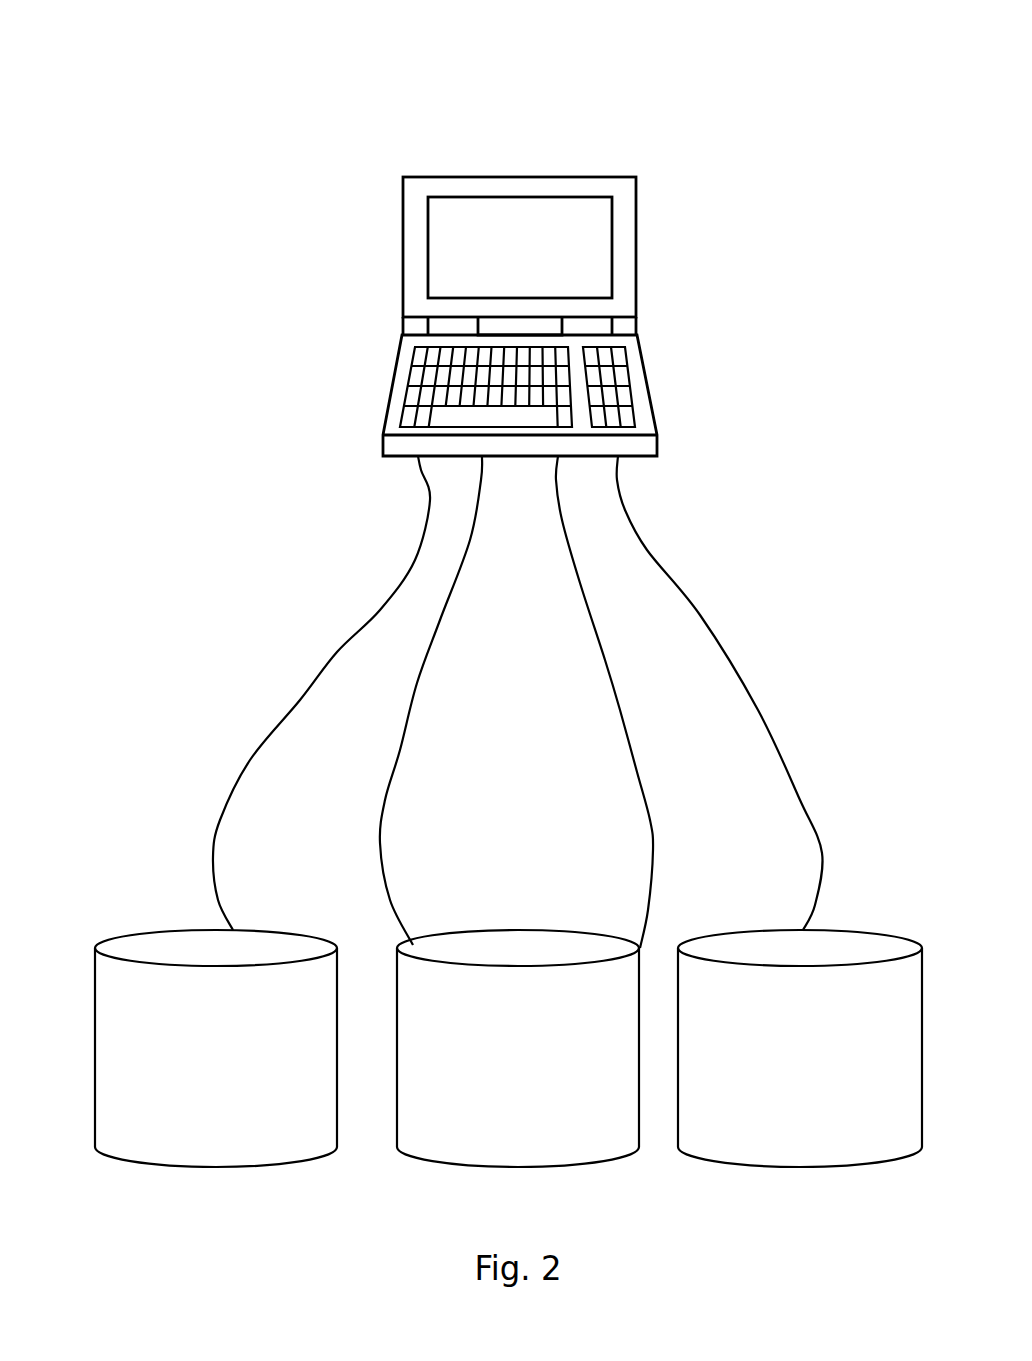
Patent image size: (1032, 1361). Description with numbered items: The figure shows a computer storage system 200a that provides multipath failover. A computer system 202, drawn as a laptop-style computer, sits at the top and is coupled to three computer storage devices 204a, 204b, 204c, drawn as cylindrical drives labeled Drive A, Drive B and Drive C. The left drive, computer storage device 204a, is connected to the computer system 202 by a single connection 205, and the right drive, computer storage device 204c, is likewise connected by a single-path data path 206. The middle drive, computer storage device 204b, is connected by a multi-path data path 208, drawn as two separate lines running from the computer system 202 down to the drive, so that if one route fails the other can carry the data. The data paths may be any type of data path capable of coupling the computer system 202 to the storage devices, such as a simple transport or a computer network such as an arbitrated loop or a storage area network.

The data storage system 200a is at (166, 125).
The computer system 202 is at (640, 238).
The computer storage device 204a is at (216, 1048).
The computer storage device 204b is at (518, 1048).
The computer storage device 204c is at (800, 1048).
The connection to drive A 205 is at (337, 652).
The single-path data path 206 is at (700, 615).
The multi-path data path 208 is at (637, 772).